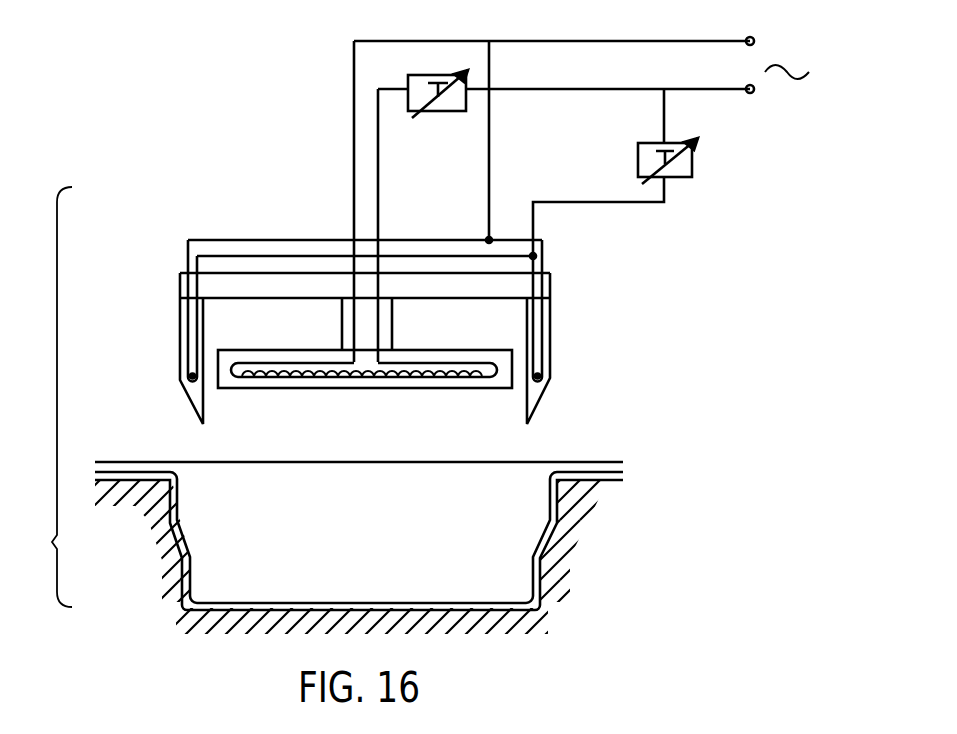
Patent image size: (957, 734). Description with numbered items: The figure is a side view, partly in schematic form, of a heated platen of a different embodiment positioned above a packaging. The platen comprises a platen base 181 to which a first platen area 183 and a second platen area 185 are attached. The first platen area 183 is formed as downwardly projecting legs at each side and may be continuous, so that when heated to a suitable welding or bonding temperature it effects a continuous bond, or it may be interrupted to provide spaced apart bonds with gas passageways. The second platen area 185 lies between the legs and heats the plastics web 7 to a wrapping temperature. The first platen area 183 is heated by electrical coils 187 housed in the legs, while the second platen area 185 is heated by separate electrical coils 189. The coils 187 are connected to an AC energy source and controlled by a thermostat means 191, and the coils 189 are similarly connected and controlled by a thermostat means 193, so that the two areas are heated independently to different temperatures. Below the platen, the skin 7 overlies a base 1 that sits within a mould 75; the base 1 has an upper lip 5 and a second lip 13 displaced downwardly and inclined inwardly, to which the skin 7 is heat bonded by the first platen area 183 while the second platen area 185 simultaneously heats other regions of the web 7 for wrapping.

The base 1 is at (366, 597).
The lip 5 is at (120, 483).
The skin 7 is at (338, 462).
The second lip 13 is at (190, 535).
The mold 75 is at (567, 512).
The platen base 181 is at (510, 283).
The first platen area 183 is at (182, 390).
The second platen area 185 is at (436, 390).
The electrical coils 187 is at (185, 370).
The electrical coils 189 is at (320, 390).
The thermostat means 191 is at (692, 163).
The thermostat means 193 is at (462, 112).